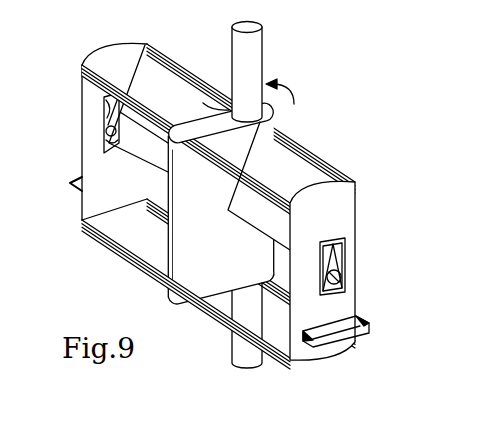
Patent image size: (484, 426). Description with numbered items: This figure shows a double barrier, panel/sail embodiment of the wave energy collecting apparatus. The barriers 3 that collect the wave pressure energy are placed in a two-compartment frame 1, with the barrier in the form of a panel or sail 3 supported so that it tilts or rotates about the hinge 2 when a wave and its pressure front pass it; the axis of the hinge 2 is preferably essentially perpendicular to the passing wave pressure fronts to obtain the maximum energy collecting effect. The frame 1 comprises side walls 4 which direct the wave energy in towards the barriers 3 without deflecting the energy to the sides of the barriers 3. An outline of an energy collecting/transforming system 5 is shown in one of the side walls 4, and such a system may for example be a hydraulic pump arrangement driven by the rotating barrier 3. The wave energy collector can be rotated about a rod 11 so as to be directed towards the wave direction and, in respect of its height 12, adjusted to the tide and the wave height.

The frame 1 is at (100, 234).
The hinge 2 is at (130, 153).
The barrier 3 is at (297, 171).
The side walls 4 is at (340, 209).
The energy collecting/transforming system 5 is at (338, 276).
The rod 11 is at (262, 195).
The height 12 is at (163, 186).